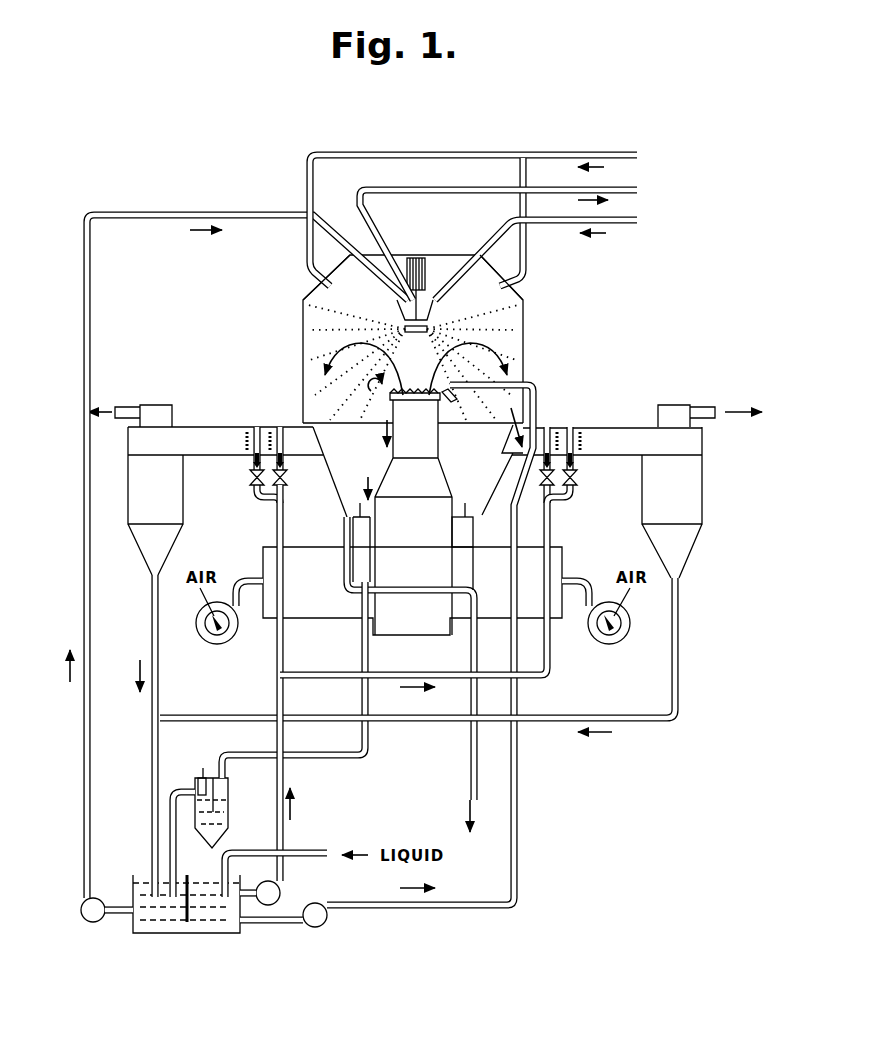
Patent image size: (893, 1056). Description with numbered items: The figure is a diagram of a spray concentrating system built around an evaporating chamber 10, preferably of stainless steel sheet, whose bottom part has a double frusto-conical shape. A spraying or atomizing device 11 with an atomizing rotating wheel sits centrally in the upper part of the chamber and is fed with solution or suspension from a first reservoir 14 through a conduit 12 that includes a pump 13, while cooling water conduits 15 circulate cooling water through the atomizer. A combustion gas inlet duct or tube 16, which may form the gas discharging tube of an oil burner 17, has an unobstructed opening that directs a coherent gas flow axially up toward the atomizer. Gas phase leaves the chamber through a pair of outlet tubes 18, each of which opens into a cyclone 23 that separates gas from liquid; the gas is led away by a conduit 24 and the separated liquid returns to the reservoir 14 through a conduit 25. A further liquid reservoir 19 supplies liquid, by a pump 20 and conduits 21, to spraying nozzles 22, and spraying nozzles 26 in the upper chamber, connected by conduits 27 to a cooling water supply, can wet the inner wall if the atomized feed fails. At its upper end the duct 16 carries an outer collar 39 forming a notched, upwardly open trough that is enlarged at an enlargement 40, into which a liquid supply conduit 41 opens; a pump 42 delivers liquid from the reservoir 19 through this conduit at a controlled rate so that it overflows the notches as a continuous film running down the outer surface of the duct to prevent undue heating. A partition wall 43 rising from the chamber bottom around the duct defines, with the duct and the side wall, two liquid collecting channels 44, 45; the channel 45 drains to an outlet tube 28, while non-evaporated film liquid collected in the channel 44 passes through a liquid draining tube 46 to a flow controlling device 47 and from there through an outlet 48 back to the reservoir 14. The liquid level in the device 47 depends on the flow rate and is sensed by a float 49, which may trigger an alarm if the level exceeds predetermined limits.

The evaporating chamber 10 is at (525, 344).
The spraying or atomizing device 11 is at (428, 300).
The conduit 12 is at (85, 335).
The pump 13 is at (81, 912).
The first reservoir 14 is at (160, 933).
The cooling water conduits 15 is at (637, 219).
The inlet duct or tube 16 is at (387, 447).
The oil burner 17 is at (562, 560).
The outlet conduits or tubes 18 is at (213, 432).
The further liquid reservoir 19 is at (222, 933).
The pump 20 is at (283, 890).
The conduits 21 is at (276, 668).
The liquid atomizing or spraying devices 22 is at (269, 432).
The cyclone 23 is at (128, 494).
The conduit 24 is at (128, 406).
The conduit 25 is at (152, 622).
The spraying nozzles 26 is at (312, 293).
The conduits 27 is at (633, 152).
The outlet tube 28 is at (480, 768).
The outer collar 39 is at (388, 399).
The enlargement 40 is at (458, 398).
The liquid supply conduit 41 is at (517, 872).
The pump 42 is at (326, 926).
The partition wall 43 is at (467, 503).
The liquid collecting channel 44 is at (453, 512).
The liquid collecting channel 45 is at (478, 507).
The liquid draining tube 46 is at (370, 752).
The flow controlling device 47 is at (229, 804).
The outlet 48 is at (172, 845).
The float 49 is at (201, 775).